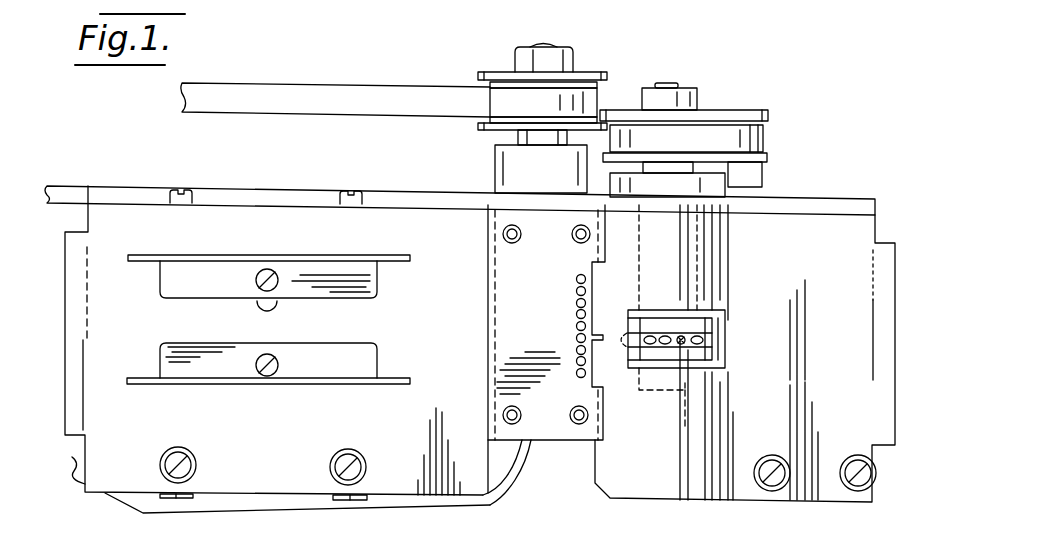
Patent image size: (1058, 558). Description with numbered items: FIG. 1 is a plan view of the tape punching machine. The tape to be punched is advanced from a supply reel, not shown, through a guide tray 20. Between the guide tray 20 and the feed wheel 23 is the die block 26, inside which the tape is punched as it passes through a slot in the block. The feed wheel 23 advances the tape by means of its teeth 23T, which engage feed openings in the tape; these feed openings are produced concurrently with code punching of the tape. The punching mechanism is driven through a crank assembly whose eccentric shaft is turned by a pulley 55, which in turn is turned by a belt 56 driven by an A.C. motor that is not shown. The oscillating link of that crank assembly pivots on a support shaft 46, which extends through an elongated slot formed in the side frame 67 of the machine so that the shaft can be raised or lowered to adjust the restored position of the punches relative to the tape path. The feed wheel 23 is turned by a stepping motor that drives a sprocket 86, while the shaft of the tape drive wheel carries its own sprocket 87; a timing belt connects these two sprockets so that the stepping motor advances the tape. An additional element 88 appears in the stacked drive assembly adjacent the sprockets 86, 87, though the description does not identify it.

The guide tray 20 is at (385, 382).
The feed wheel 23 is at (712, 348).
The teeth 23T is at (712, 339).
The die block 26 is at (547, 437).
The support shaft 46 is at (528, 45).
The pulley 55 is at (595, 75).
The belt 56 is at (356, 62).
The side frame 67 is at (440, 166).
The sprocket 86 is at (770, 157).
The sprocket 87 is at (710, 110).
The pulley 88 is at (765, 138).